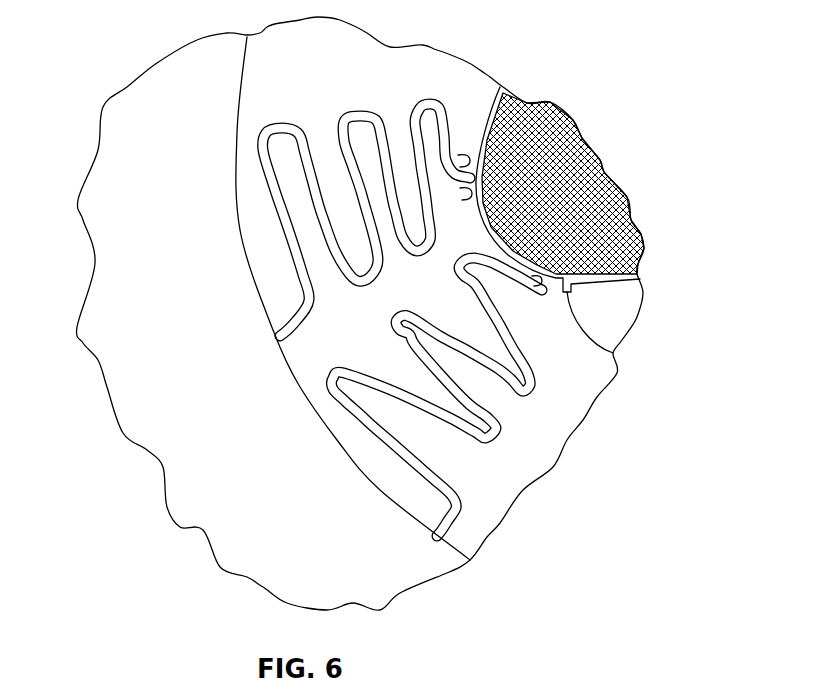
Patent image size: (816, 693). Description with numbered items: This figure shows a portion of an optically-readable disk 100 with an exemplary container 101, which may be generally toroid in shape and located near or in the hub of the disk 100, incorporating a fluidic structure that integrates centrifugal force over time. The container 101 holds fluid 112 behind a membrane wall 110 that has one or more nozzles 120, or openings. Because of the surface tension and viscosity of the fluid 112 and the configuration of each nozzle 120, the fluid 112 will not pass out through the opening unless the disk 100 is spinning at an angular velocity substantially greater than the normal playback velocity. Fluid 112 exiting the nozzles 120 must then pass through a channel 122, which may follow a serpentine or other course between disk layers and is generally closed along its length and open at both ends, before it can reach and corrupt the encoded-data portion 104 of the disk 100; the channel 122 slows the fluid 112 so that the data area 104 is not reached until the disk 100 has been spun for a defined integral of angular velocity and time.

The optically-readable disk 100 is at (200, 38).
The encoded-data portion 104 is at (140, 123).
The membrane wall 110 is at (488, 100).
The fluid 112 is at (588, 190).
The nozzle 120 is at (526, 100).
The channel 122 is at (350, 108).
The container 101 is at (624, 285).